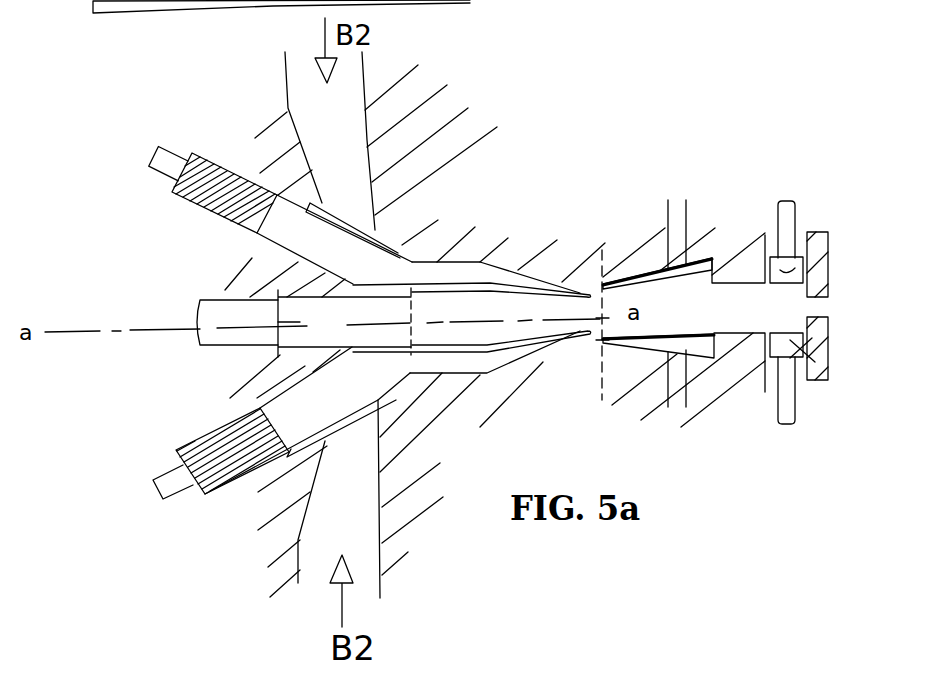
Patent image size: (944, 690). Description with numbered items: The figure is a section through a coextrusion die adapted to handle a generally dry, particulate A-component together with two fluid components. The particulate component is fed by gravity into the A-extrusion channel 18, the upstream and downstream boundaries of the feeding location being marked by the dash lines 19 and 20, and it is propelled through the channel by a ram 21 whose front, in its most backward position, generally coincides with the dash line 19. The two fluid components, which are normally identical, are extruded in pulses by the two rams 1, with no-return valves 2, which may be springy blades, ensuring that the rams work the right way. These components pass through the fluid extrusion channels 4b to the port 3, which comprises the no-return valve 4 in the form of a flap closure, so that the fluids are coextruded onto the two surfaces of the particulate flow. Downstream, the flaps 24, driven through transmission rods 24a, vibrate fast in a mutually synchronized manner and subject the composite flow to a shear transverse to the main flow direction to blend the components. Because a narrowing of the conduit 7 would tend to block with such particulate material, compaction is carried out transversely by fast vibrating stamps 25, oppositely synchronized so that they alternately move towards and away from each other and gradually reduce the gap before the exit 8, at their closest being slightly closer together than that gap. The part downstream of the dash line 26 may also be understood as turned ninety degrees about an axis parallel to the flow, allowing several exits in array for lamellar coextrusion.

The ram 1 is at (203, 207).
The no-return valve 2 is at (347, 221).
The port 3 is at (597, 263).
The no-return valve 4 is at (543, 279).
The B1 and B2 extrusion channel 4b is at (452, 270).
The conduit 7 is at (738, 313).
The exit 8 is at (822, 304).
The A-extrusion channel 18 is at (385, 323).
The dash line 19 is at (283, 330).
The dash line 20 is at (402, 322).
The ram 21 is at (228, 355).
The flap 24 is at (661, 286).
The transmission rod 24a is at (670, 205).
The vibrating stamp 25 is at (820, 255).
The dash line 26 is at (603, 257).